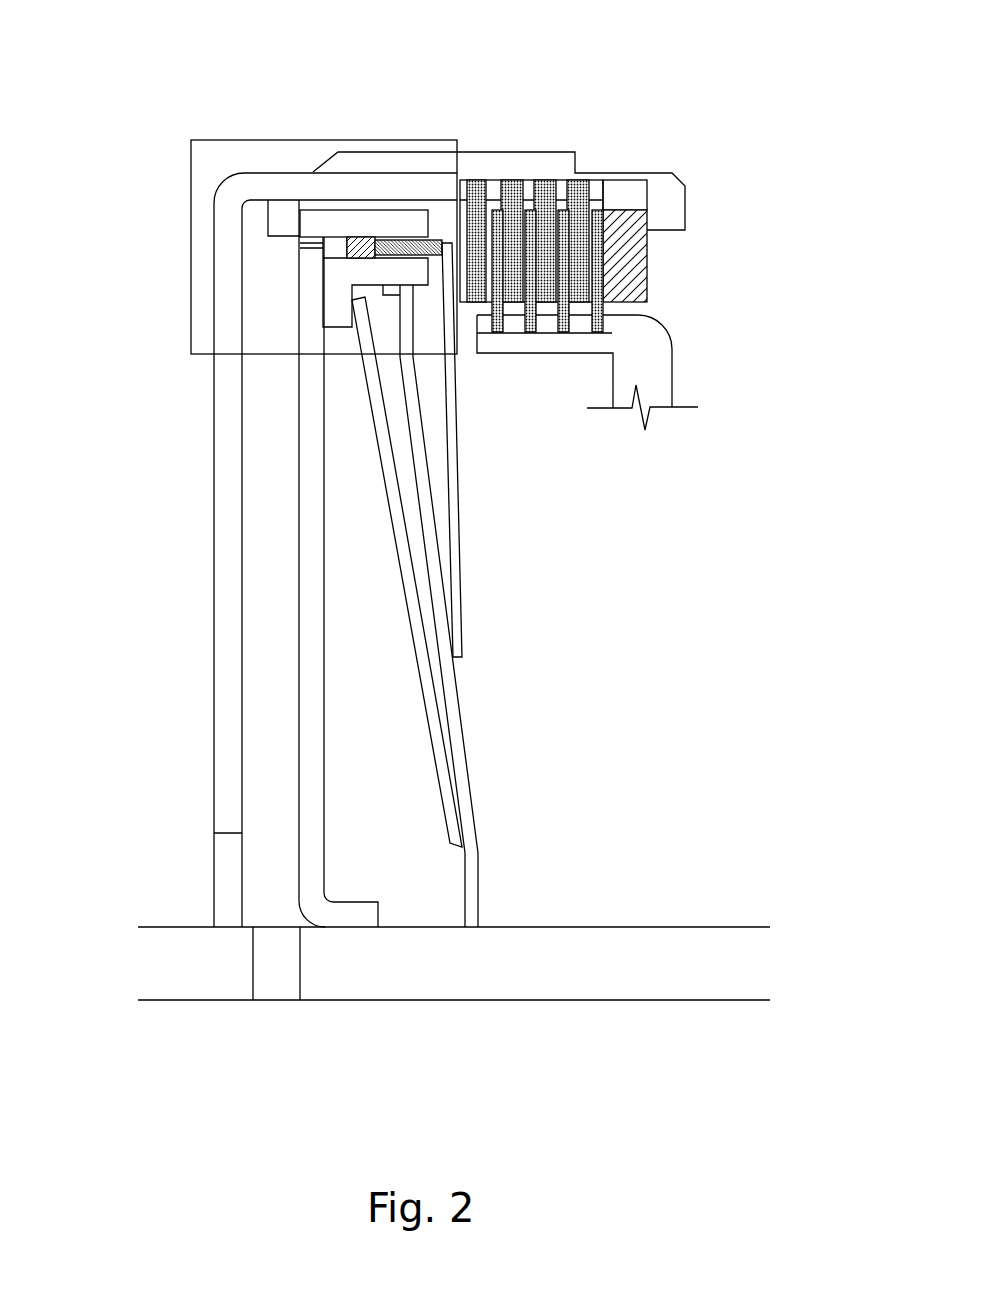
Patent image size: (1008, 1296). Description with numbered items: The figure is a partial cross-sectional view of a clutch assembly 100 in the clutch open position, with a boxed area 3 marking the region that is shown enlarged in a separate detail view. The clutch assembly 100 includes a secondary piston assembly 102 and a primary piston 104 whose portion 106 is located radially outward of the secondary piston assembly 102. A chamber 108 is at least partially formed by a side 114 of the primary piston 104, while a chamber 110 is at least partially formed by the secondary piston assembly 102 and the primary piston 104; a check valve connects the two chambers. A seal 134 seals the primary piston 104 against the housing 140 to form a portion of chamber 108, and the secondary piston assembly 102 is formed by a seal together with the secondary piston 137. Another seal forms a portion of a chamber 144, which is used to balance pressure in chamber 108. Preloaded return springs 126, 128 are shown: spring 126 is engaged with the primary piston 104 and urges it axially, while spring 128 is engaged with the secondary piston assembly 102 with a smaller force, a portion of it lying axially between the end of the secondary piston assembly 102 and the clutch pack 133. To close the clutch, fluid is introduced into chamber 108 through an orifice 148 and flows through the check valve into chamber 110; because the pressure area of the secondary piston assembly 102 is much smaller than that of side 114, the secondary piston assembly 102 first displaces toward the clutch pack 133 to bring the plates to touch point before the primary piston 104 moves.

The clutch assembly 100 is at (718, 90).
The secondary piston assembly 102 is at (400, 232).
The primary piston 104 is at (312, 201).
The portion 106 is at (373, 220).
The chamber 108 is at (272, 627).
The chamber 110 is at (338, 227).
The side 114 is at (306, 483).
The return spring 126 is at (408, 582).
The return spring 128 is at (463, 519).
The clutch pack 133 is at (490, 168).
The seal 134 is at (280, 218).
The secondary piston 137 is at (438, 237).
The housing 140 is at (215, 743).
The chamber 144 is at (394, 828).
The orifice 148 is at (282, 988).
The area 3 is at (190, 288).